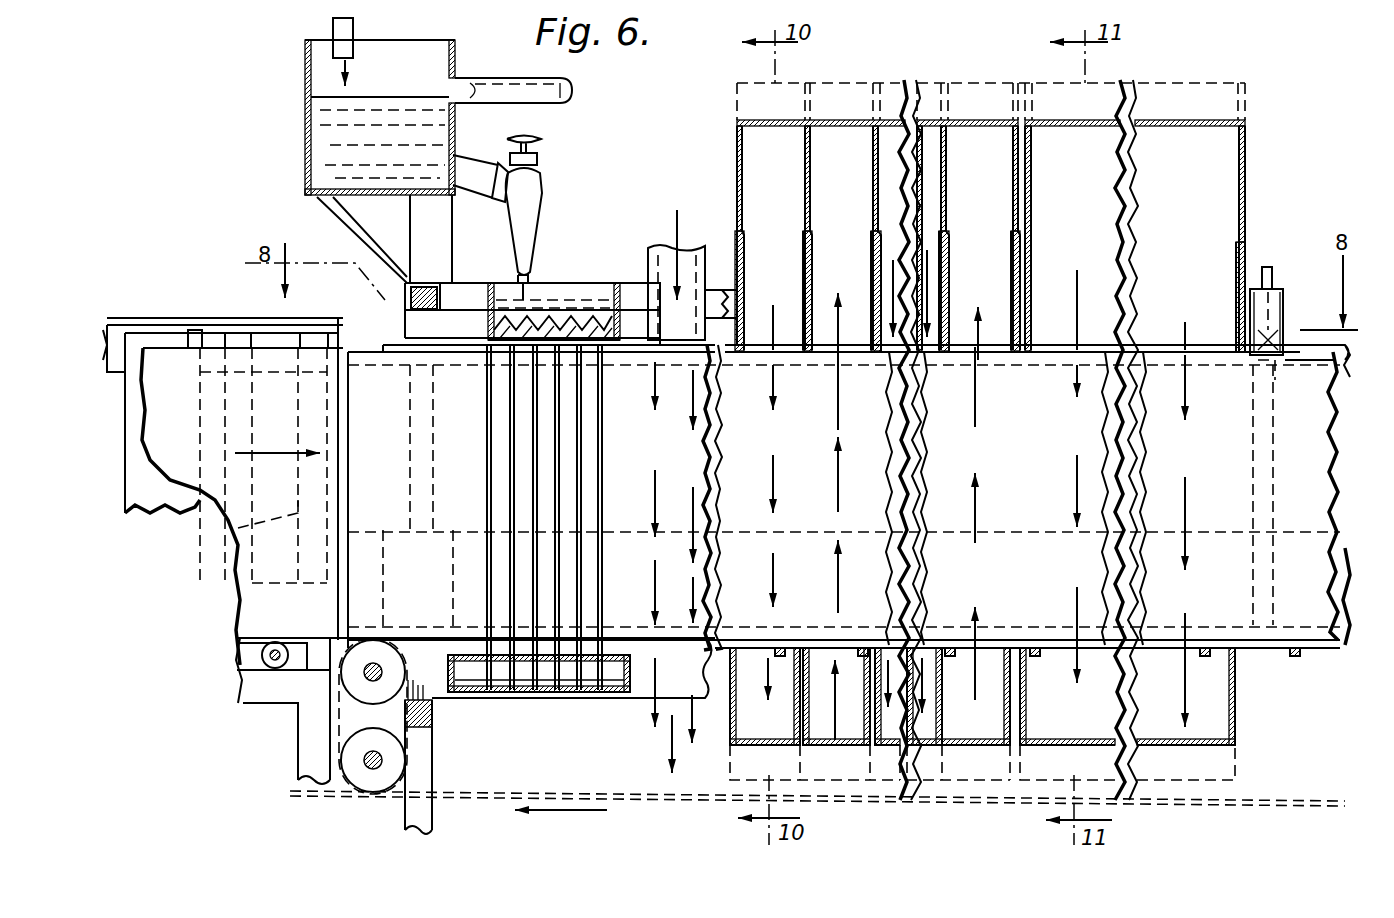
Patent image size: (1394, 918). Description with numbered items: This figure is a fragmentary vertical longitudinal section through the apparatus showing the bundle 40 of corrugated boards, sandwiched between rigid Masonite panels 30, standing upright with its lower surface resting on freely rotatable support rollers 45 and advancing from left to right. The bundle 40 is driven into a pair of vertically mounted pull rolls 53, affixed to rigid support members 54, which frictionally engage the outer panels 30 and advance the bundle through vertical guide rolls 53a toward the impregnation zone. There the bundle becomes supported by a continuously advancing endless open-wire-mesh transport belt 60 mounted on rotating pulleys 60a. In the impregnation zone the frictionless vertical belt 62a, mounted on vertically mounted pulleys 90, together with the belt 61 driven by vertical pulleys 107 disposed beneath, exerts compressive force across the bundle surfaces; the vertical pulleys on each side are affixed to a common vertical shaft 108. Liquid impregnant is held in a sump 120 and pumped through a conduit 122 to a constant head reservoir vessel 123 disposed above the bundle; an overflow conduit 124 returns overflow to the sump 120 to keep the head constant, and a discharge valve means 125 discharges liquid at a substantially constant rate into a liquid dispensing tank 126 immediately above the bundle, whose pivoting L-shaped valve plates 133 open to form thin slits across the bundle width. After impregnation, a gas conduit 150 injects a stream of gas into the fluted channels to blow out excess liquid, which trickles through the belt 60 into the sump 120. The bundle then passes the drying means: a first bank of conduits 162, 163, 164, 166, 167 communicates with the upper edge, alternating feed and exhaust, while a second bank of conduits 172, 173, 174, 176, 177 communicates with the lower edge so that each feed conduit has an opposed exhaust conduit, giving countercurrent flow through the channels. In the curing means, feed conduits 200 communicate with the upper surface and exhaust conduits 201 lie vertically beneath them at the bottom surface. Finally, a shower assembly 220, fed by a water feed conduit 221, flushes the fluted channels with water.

The Masonite panel 30 is at (340, 405).
The bundle 40 is at (233, 577).
The support rollers 45 is at (262, 652).
The pull rolls 53 is at (145, 515).
The vertical guide rolls 53a is at (232, 528).
The rigid support members 54 is at (210, 312).
The endless transport belt 60 is at (455, 782).
The rotating pulleys 60a is at (360, 780).
The belt 61 is at (1345, 548).
The frictionless vertical belt 62a is at (1312, 372).
The vertically mounted pulley 90 is at (385, 345).
The vertical pulleys 107 is at (383, 535).
The common vertical shaft 108 is at (410, 455).
The sump 120 is at (605, 697).
The conduit 122 is at (333, 26).
The constant head reservoir vessel 123 is at (305, 112).
The overflow conduit 124 is at (570, 90).
The discharge valve means 125 is at (540, 183).
The liquid dispensing tank 126 is at (609, 280).
The L-shaped valve plate 133 is at (572, 312).
The gas conduit 150 is at (705, 258).
The feed conduit 162 is at (780, 178).
The exhaust conduit 163 is at (855, 178).
The feed conduit 164 is at (892, 203).
The feed conduit 166 is at (933, 184).
The exhaust conduit 167 is at (1008, 163).
The exhaust conduit 172 is at (740, 748).
The feed conduit 173 is at (870, 735).
The conduit 174 is at (880, 748).
The conduit 176 is at (925, 736).
The conduit 177 is at (1006, 710).
The feed conduit 200 is at (1112, 178).
The exhaust conduit 201 is at (1165, 718).
The shower assembly 220 is at (1262, 372).
The water feed conduit 221 is at (1275, 262).